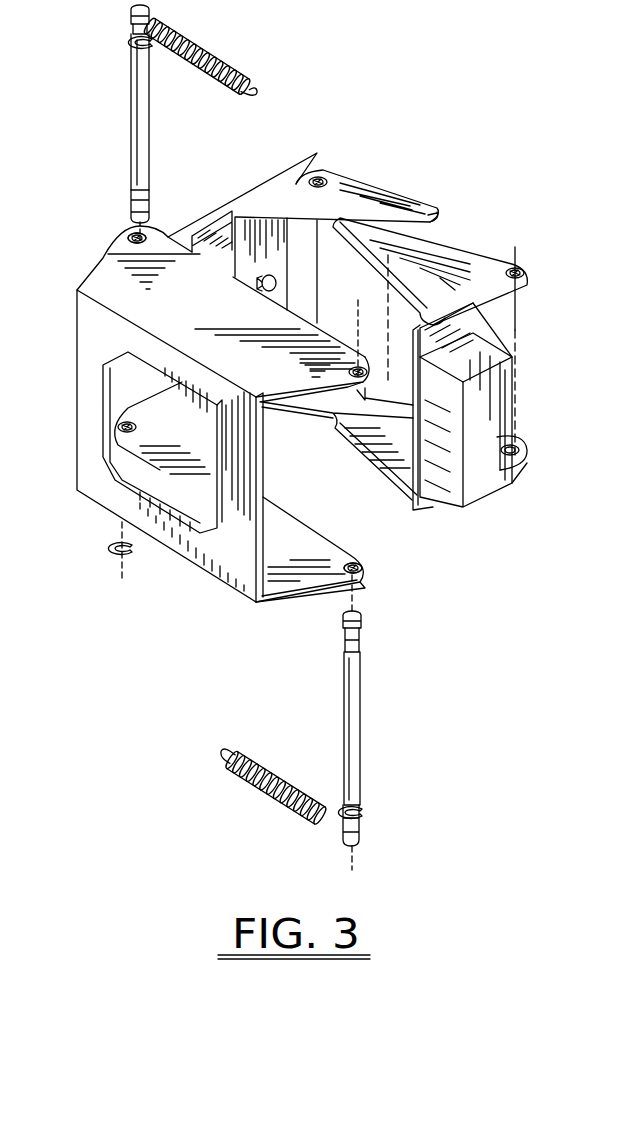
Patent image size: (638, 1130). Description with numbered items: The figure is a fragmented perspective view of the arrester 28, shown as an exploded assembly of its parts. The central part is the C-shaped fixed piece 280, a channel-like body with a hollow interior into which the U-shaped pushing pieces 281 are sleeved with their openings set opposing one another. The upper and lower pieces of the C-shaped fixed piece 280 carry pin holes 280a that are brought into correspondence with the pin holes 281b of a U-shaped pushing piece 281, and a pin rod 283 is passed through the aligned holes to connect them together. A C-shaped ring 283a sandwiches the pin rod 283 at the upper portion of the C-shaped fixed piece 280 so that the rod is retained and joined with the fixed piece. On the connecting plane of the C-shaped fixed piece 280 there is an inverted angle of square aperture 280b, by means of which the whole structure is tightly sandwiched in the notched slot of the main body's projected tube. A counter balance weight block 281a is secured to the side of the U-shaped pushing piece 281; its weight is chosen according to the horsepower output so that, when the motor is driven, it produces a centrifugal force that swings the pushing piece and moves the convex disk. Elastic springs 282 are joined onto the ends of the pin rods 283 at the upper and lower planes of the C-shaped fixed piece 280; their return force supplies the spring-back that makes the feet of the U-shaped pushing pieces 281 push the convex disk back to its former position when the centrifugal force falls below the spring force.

The arrester 28 is at (453, 128).
The C-shaped fixed piece 280 is at (103, 265).
The pin holes 280a is at (147, 233).
The inverted angle of square aperture 280b is at (107, 383).
The U-shaped pushing piece 281 is at (473, 320).
The counter balance weight block 281a is at (503, 426).
The pin holes 281b is at (330, 173).
The elastic spring 282 is at (228, 65).
The pin rod 283 is at (131, 135).
The C-shaped ring 283a is at (128, 44).